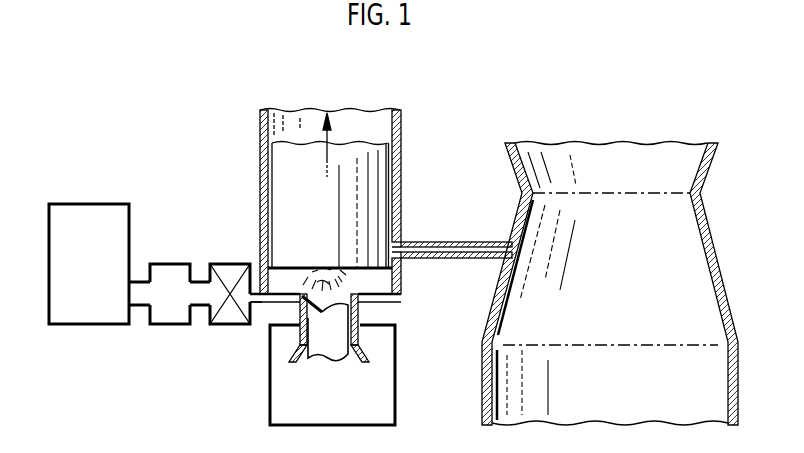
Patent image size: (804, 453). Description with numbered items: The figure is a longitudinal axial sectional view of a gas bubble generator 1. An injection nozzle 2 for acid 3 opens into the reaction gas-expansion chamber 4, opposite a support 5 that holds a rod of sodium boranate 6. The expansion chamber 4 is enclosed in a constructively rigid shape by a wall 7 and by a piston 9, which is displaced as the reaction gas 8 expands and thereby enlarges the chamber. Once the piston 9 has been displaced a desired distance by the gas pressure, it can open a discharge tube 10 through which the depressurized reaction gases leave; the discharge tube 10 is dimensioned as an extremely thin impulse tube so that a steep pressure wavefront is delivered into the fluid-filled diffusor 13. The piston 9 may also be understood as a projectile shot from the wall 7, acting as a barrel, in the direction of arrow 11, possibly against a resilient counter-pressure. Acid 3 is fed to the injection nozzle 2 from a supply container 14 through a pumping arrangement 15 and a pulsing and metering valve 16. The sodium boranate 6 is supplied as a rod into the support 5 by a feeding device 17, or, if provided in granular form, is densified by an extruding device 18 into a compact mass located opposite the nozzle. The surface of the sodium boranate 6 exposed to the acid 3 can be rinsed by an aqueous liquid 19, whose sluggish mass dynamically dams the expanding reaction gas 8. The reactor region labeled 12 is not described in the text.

The gas bubble generator 1 is at (410, 292).
The injection nozzle 2 is at (285, 314).
The acid 3 is at (95, 291).
The reaction gas-expansion chamber 4 is at (387, 277).
The support 5 is at (360, 308).
The sodium boranate 6 is at (323, 357).
The wall 7 is at (400, 197).
The reaction gas 8 is at (318, 267).
The piston 9 is at (293, 170).
The discharge tube 10 is at (450, 248).
The arrow 11 is at (327, 135).
The reactor 12 is at (708, 190).
The diffusor 13 is at (644, 283).
The supply container 14 is at (118, 228).
The pumping arrangement 15 is at (173, 307).
The pulsing and metering valve 16 is at (227, 313).
The feeding device 17 is at (397, 360).
The extruding device 18 is at (297, 352).
The aqueous liquid 19 is at (644, 170).